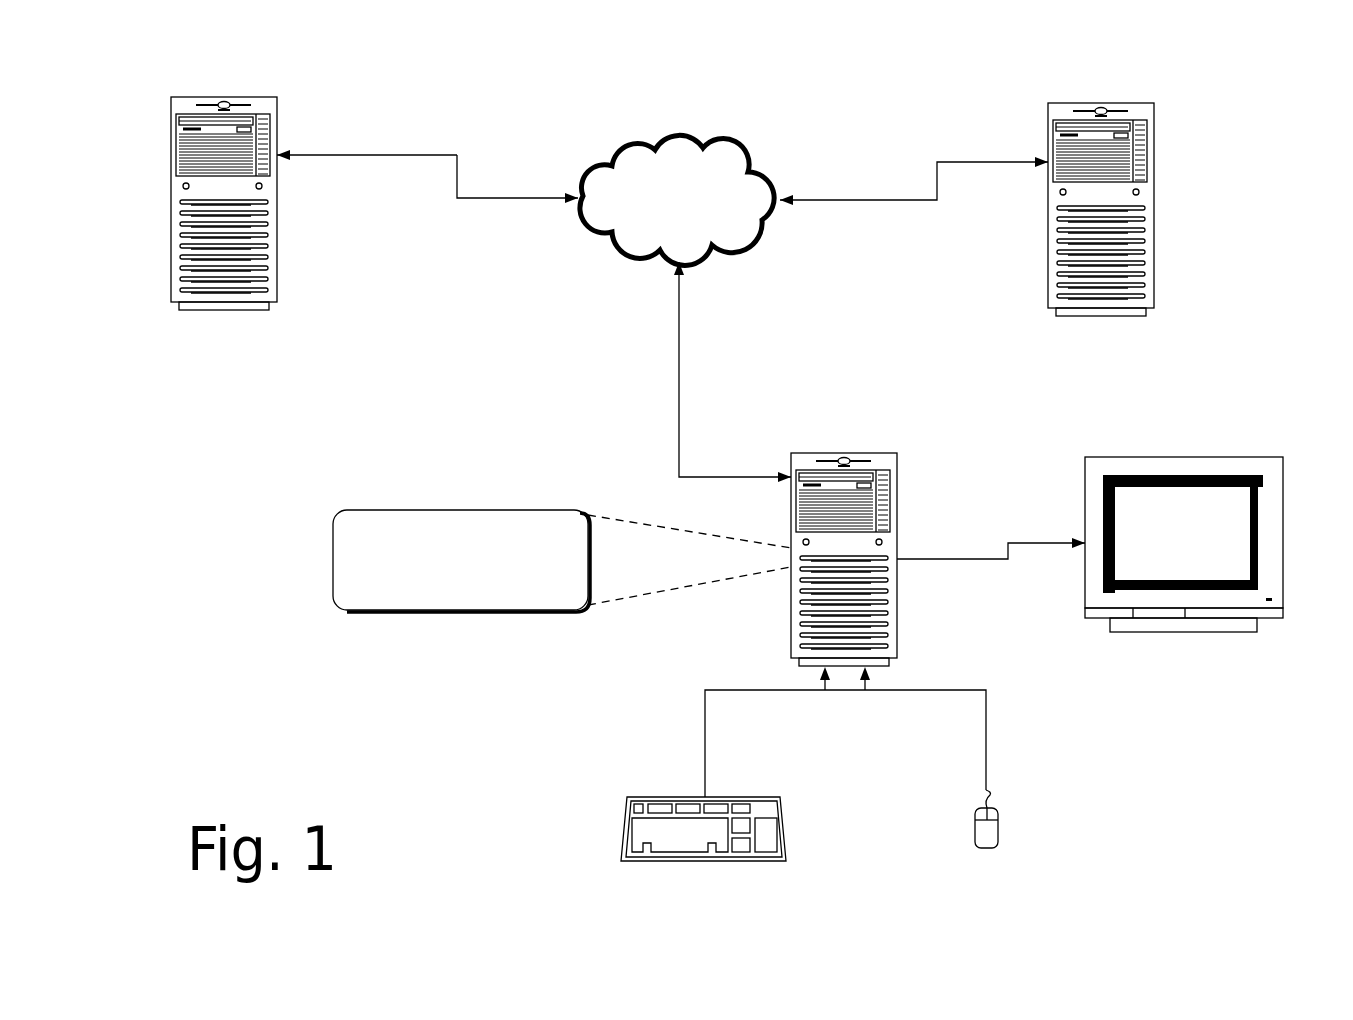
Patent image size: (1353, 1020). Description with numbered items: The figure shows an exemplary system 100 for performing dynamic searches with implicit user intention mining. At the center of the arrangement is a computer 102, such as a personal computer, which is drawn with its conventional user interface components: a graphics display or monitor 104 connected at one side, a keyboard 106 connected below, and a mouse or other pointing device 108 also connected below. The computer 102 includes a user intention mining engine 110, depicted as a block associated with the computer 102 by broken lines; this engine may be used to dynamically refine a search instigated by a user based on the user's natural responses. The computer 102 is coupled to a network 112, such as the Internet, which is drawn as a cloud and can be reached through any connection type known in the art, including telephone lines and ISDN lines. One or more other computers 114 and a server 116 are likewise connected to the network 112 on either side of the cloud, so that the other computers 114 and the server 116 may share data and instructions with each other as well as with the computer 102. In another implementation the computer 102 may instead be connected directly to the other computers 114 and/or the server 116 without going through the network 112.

The system 100 is at (1212, 90).
The computer 102 is at (843, 453).
The monitor 104 is at (1183, 457).
The keyboard 106 is at (702, 862).
The mouse 108 is at (988, 848).
The user intention mining engine 110 is at (461, 561).
The network 112 is at (679, 137).
The other computers 114 is at (188, 97).
The server 116 is at (1068, 103).